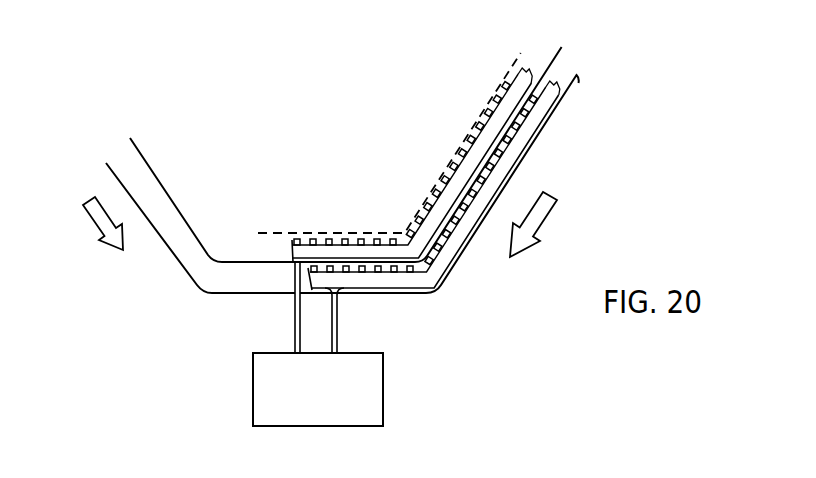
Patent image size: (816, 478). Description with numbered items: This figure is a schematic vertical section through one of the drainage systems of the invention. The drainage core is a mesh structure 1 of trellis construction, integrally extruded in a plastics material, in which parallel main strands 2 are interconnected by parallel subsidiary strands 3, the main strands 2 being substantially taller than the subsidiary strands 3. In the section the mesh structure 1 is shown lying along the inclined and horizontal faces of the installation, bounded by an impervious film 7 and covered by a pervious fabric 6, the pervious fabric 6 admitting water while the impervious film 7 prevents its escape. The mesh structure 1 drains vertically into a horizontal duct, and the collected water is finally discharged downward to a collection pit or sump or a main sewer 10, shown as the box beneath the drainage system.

The mesh structure 1 is at (463, 138).
The main strands 2 is at (463, 172).
The subsidiary strands 3 is at (462, 200).
The pervious fabric 6 is at (486, 108).
The impervious film 7 is at (163, 185).
The main sewer 10 is at (375, 390).